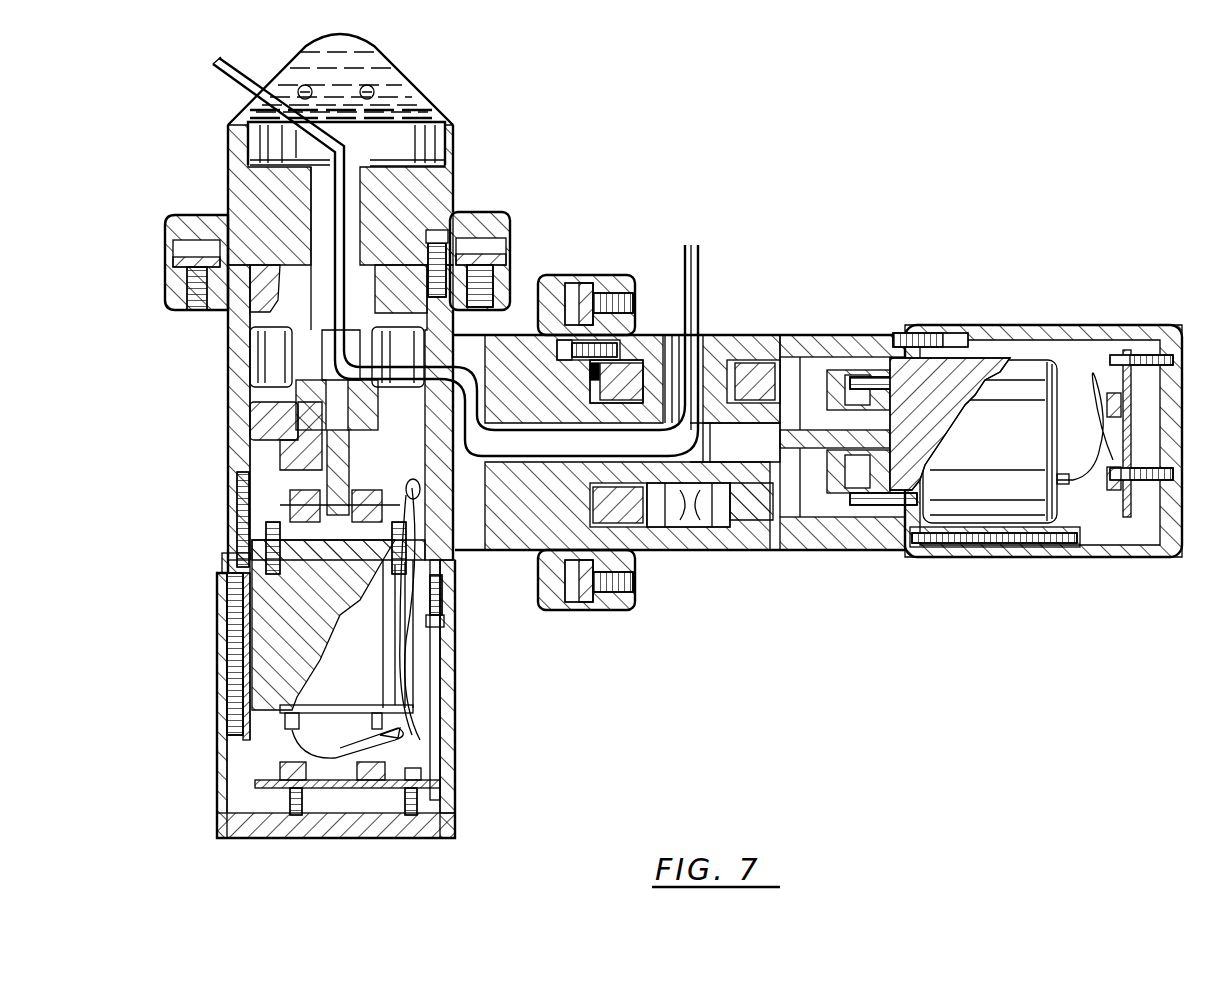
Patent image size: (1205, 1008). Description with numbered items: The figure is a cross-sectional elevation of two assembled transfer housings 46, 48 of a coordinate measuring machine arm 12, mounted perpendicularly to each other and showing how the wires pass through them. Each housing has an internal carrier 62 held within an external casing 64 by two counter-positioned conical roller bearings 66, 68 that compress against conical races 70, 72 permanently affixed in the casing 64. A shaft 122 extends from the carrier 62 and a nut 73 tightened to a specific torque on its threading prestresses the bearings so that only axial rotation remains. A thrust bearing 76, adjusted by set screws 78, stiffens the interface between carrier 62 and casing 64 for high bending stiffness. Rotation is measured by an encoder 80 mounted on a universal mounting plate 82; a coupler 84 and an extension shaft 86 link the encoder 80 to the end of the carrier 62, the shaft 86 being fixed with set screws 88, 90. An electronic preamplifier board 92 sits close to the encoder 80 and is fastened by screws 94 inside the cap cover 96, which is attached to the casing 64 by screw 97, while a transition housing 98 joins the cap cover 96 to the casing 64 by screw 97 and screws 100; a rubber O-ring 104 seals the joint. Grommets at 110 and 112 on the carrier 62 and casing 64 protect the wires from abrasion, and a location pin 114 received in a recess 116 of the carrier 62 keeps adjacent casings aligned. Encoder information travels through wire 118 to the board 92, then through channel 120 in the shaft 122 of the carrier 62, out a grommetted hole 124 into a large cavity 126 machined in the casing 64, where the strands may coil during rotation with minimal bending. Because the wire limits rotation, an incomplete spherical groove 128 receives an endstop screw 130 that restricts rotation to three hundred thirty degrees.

The arm 12 is at (712, 460).
The transfer housing 46 is at (855, 333).
The transfer housing 48 is at (215, 678).
The internal carrier 62 is at (228, 164).
The external casing 64 is at (236, 376).
The conical roller bearing 66 is at (258, 324).
The conical roller bearing 68 is at (282, 430).
The conical race 70 is at (262, 410).
The conical race 72 is at (262, 305).
The nut 73 is at (305, 472).
The thrust bearing 76 is at (163, 255).
The set screws 78 is at (185, 290).
The encoder 80 is at (442, 648).
The universal mounting plate 82 is at (268, 558).
The coupler 84 is at (240, 572).
The extension shaft 86 is at (330, 485).
The set screw 88 is at (235, 512).
The set screw 90 is at (228, 614).
The electronic preamplifier board 92 is at (275, 772).
The screws 94 is at (410, 820).
The cap cover 96 is at (455, 775).
The screw 97 is at (232, 690).
The transition housing 98 is at (220, 582).
The screws 100 is at (448, 620).
The O-ring 104 is at (420, 250).
The grommet 110 is at (440, 380).
The grommet 112 is at (336, 422).
The location pin 114 is at (228, 124).
The recess 116 is at (246, 134).
The wire 118 is at (705, 256).
The channel 120 is at (686, 250).
The shaft 122 is at (690, 475).
The grommetted hole 124 is at (712, 400).
The cavity 126 is at (698, 400).
The spherical groove 128 is at (548, 345).
The endstop screw 130 is at (650, 346).